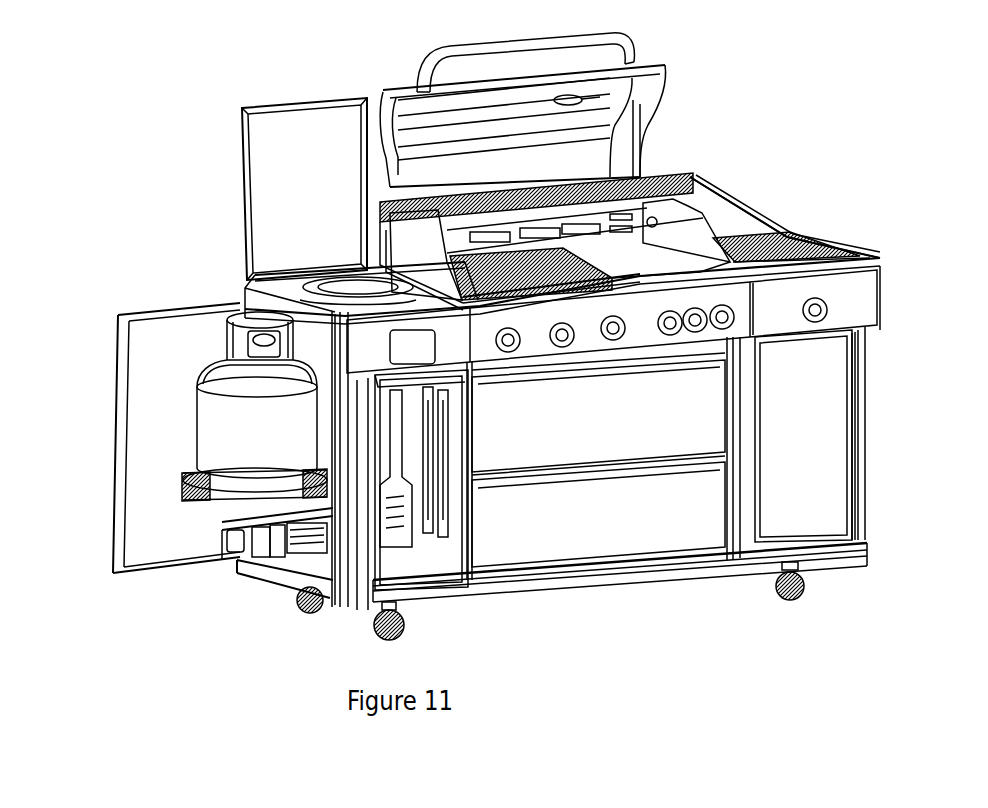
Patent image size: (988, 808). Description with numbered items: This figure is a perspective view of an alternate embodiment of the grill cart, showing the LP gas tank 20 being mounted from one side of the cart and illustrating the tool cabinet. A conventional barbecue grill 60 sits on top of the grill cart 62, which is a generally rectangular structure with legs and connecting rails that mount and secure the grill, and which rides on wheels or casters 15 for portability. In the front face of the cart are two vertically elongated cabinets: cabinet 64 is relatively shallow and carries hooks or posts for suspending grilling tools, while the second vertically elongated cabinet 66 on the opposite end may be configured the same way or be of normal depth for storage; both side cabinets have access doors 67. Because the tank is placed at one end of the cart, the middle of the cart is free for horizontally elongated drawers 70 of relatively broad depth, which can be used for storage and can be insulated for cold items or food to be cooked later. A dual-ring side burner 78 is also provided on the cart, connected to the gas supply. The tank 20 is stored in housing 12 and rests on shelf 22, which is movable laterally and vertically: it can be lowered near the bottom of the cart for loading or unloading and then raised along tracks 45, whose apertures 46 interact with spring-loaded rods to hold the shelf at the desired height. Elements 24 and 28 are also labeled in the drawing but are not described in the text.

The housing 12 is at (308, 337).
The wheels or casters 15 is at (802, 600).
The LP gas tank 20 is at (210, 393).
The shelf 22 is at (180, 500).
The tank support shelf 24 is at (263, 517).
The side shelf 28 is at (247, 123).
The tracks 45 is at (278, 552).
The apertures 46 is at (277, 553).
The barbecue grill 60 is at (410, 85).
The grill cart 62 is at (567, 600).
The cabinet 64 is at (413, 555).
The second vertically elongated cabinet 66 is at (810, 513).
The access doors 67 is at (353, 585).
The drawers 70 is at (562, 435).
The dual-ring side burner 78 is at (787, 236).